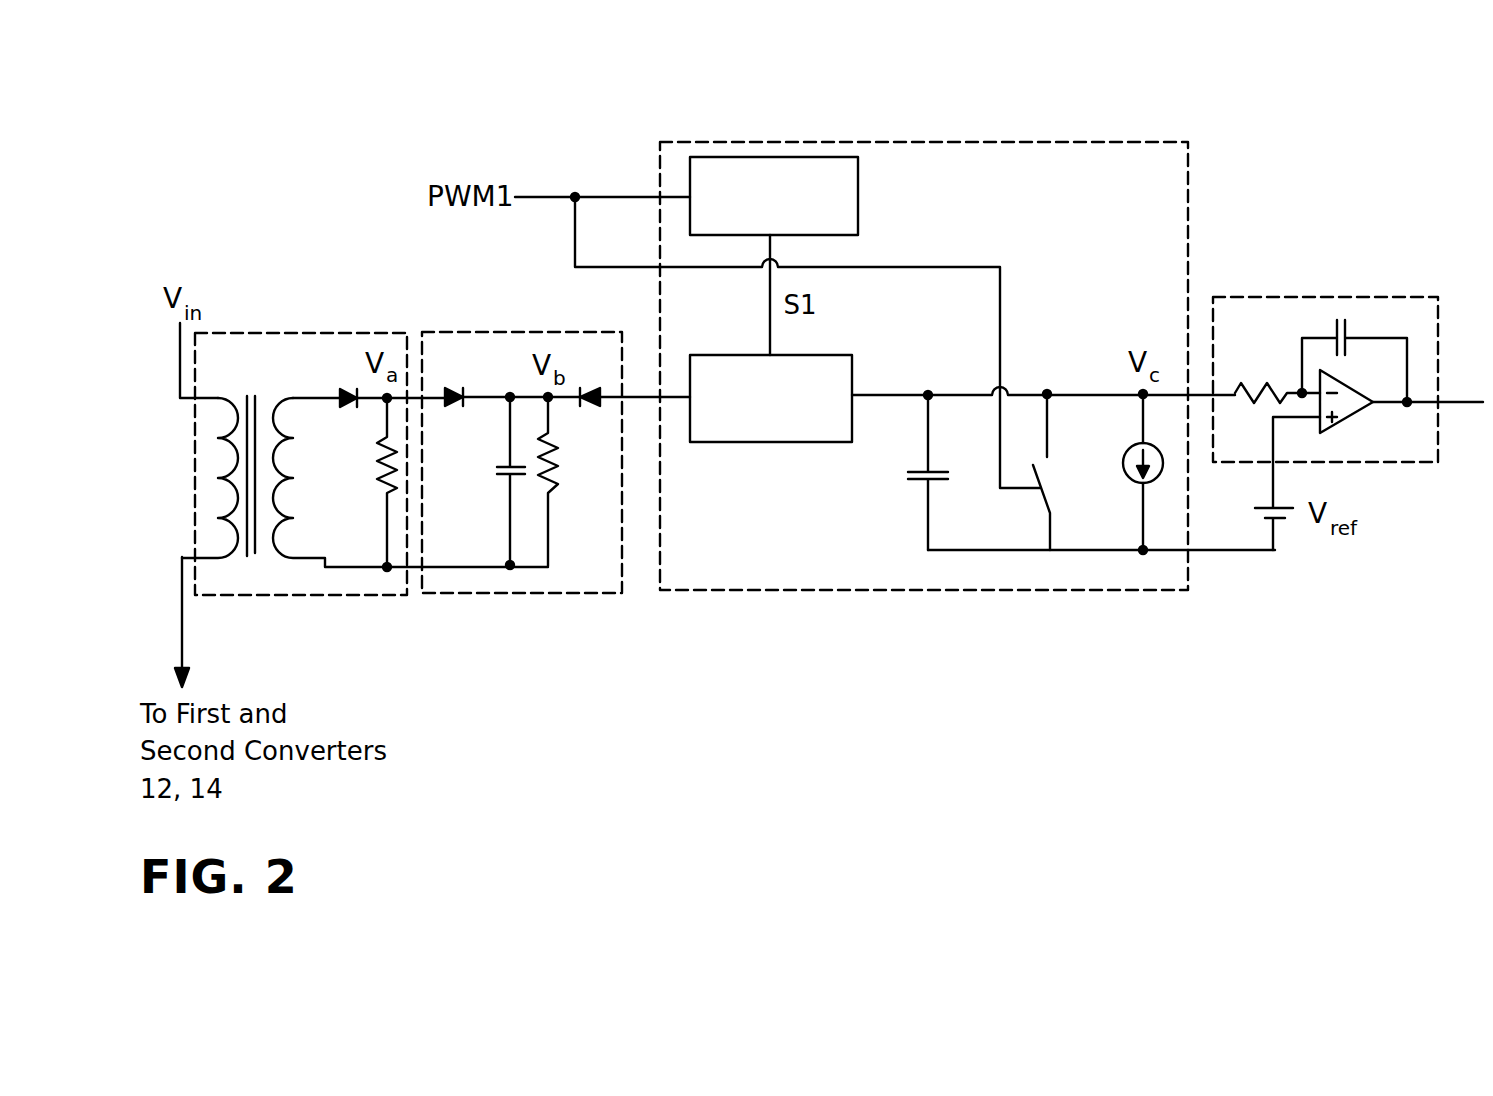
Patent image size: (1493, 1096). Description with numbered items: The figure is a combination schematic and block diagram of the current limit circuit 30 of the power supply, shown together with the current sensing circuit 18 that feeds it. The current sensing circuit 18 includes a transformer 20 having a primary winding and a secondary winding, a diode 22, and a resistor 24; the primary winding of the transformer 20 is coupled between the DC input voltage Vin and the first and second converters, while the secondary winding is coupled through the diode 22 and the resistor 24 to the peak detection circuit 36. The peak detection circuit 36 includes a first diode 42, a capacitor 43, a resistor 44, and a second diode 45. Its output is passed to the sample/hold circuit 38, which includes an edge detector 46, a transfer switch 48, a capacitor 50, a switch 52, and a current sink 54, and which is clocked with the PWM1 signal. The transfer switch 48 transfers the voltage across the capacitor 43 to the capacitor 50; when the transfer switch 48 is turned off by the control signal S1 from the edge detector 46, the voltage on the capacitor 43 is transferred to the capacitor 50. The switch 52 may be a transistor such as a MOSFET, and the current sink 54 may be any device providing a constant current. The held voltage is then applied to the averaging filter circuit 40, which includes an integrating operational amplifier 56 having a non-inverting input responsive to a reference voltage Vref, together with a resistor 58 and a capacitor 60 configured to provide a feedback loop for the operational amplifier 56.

The current sensing circuit 18 is at (360, 593).
The transformer 20 is at (255, 553).
The diode 22 is at (338, 392).
The resistor 24 is at (379, 466).
The current limit circuit 30 is at (1260, 158).
The peak detection circuit 36 is at (548, 593).
The sample/hold circuit 38 is at (1052, 590).
The averaging filter circuit 40 is at (1390, 462).
The first diode 42 is at (450, 405).
The capacitor 43 is at (502, 478).
The resistor 44 is at (558, 462).
The second diode 45 is at (588, 406).
The edge detector 46 is at (858, 208).
The transfer switch 48 is at (815, 355).
The capacitor 50 is at (905, 473).
The switch 52 is at (1040, 491).
The current sink 54 is at (1128, 451).
The integrating operational amplifier 56 is at (1358, 410).
The resistor 58 is at (1278, 380).
The capacitor 60 is at (1347, 328).